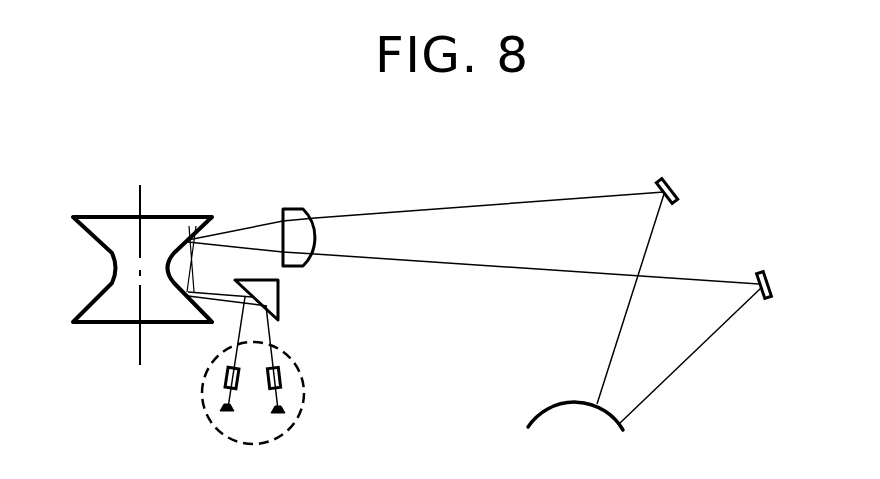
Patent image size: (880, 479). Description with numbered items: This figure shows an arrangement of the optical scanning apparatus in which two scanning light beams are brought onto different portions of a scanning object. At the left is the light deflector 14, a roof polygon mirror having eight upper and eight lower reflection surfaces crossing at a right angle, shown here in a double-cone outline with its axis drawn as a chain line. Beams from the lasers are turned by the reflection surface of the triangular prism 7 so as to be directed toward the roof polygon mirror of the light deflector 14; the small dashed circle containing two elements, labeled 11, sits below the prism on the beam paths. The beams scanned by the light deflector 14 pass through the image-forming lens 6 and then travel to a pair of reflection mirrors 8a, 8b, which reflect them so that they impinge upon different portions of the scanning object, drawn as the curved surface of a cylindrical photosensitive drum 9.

The light deflector 14 is at (108, 305).
The image-forming lens 6 is at (296, 212).
The triangular prism 7 is at (280, 303).
The photodetector unit 11 is at (304, 378).
The reflection mirror 8a is at (670, 187).
The reflection mirror 8b is at (769, 274).
The cylindrical photosensitive drum 9 is at (560, 413).